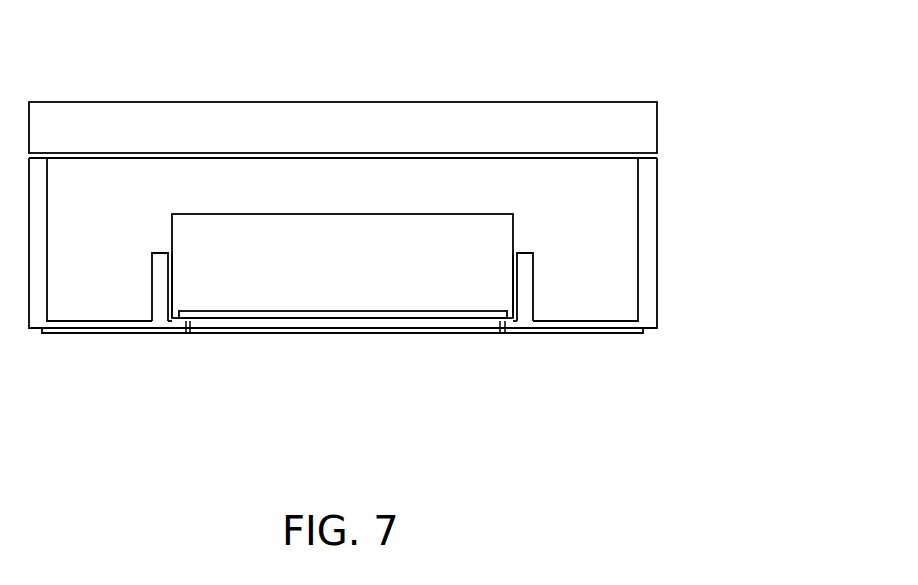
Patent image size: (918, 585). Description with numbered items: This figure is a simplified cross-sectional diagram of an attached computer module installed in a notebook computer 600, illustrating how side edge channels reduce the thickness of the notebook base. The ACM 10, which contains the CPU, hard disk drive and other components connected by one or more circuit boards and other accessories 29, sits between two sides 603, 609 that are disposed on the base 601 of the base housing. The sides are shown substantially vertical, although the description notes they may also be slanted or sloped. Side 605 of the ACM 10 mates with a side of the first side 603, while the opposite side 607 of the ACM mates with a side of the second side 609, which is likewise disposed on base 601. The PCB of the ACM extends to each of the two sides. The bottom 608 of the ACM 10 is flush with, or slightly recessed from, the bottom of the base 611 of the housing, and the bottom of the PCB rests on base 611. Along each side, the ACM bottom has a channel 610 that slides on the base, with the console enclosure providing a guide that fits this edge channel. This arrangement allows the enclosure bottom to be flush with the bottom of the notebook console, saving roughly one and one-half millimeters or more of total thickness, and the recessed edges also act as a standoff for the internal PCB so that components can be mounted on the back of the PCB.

The notebook computer 600 is at (714, 68).
The base of the base housing 601 is at (568, 322).
The side 603 is at (528, 268).
The side of ACM 605 is at (513, 267).
The side 607 is at (172, 259).
The side 609 is at (164, 274).
The ACM 10 is at (488, 227).
The other accessories 29 is at (412, 318).
The bottom of the ACM 608 is at (297, 333).
The channel 610 is at (505, 333).
The base of the housing 611 is at (80, 333).